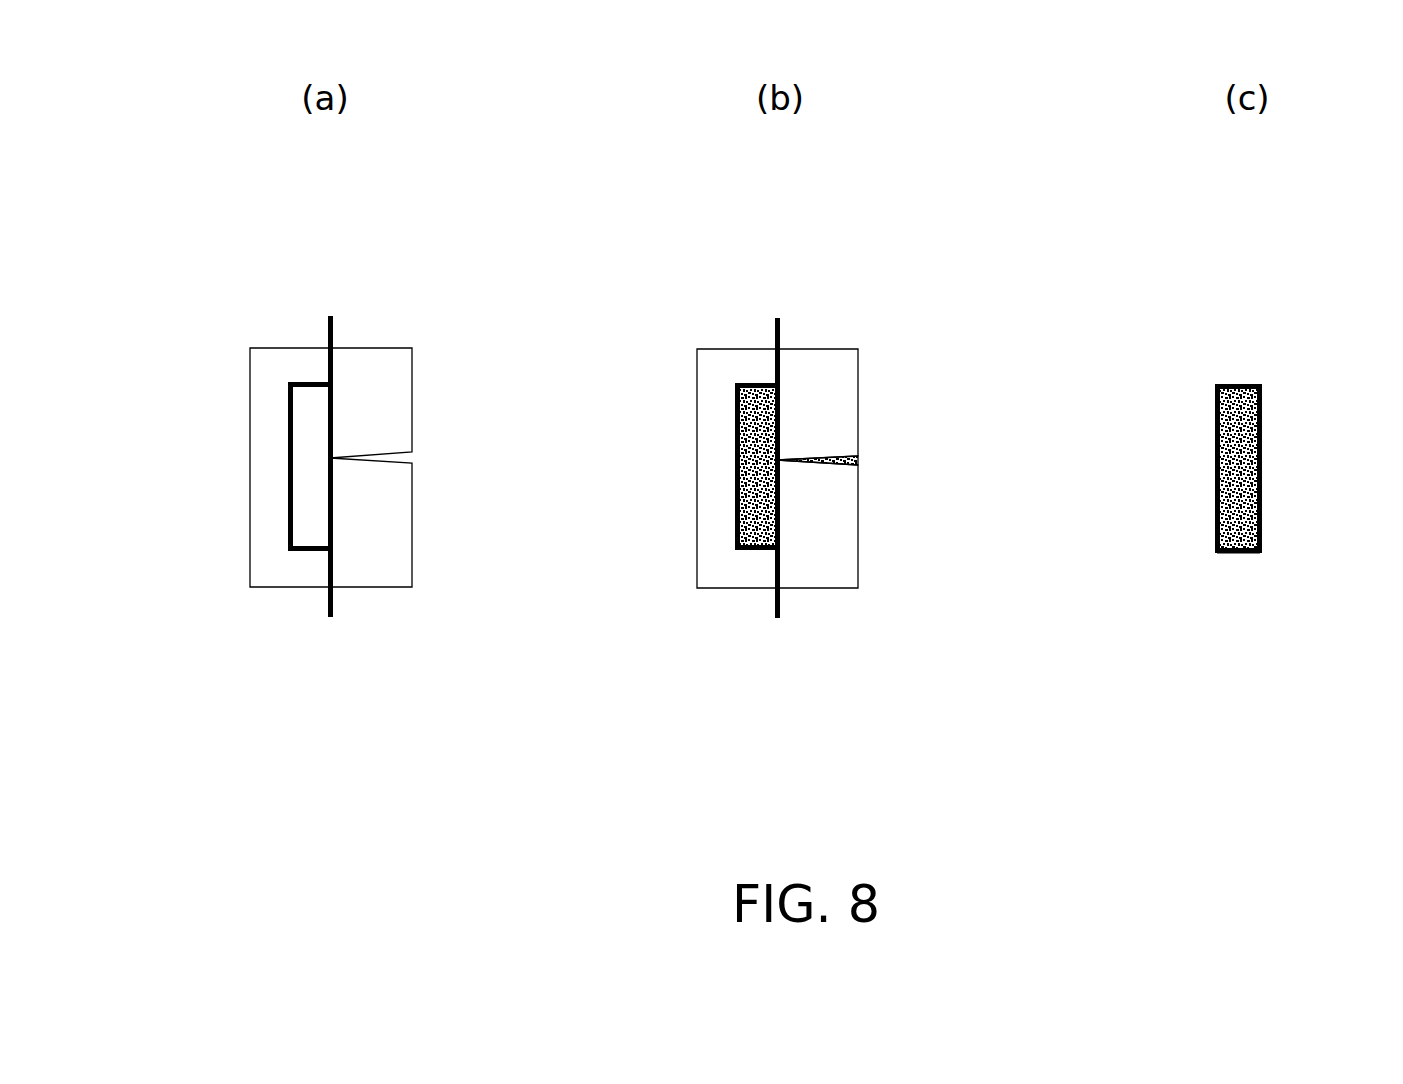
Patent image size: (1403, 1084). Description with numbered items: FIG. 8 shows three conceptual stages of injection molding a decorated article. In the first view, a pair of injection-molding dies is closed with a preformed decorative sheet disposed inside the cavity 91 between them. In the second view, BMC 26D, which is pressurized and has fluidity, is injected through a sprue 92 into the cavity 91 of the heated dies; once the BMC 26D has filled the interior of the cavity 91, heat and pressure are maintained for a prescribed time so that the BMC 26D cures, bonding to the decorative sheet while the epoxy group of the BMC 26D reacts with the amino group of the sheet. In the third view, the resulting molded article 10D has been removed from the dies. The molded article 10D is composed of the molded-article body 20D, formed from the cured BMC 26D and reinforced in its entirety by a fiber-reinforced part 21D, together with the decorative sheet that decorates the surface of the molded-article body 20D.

The BMC 26D is at (748, 550).
The cavity 91 is at (778, 508).
The sprue 92 is at (832, 472).
The molded article 10D is at (1280, 383).
The molded-article body 20D is at (1262, 490).
The fiber-reinforced part 21D is at (1237, 553).